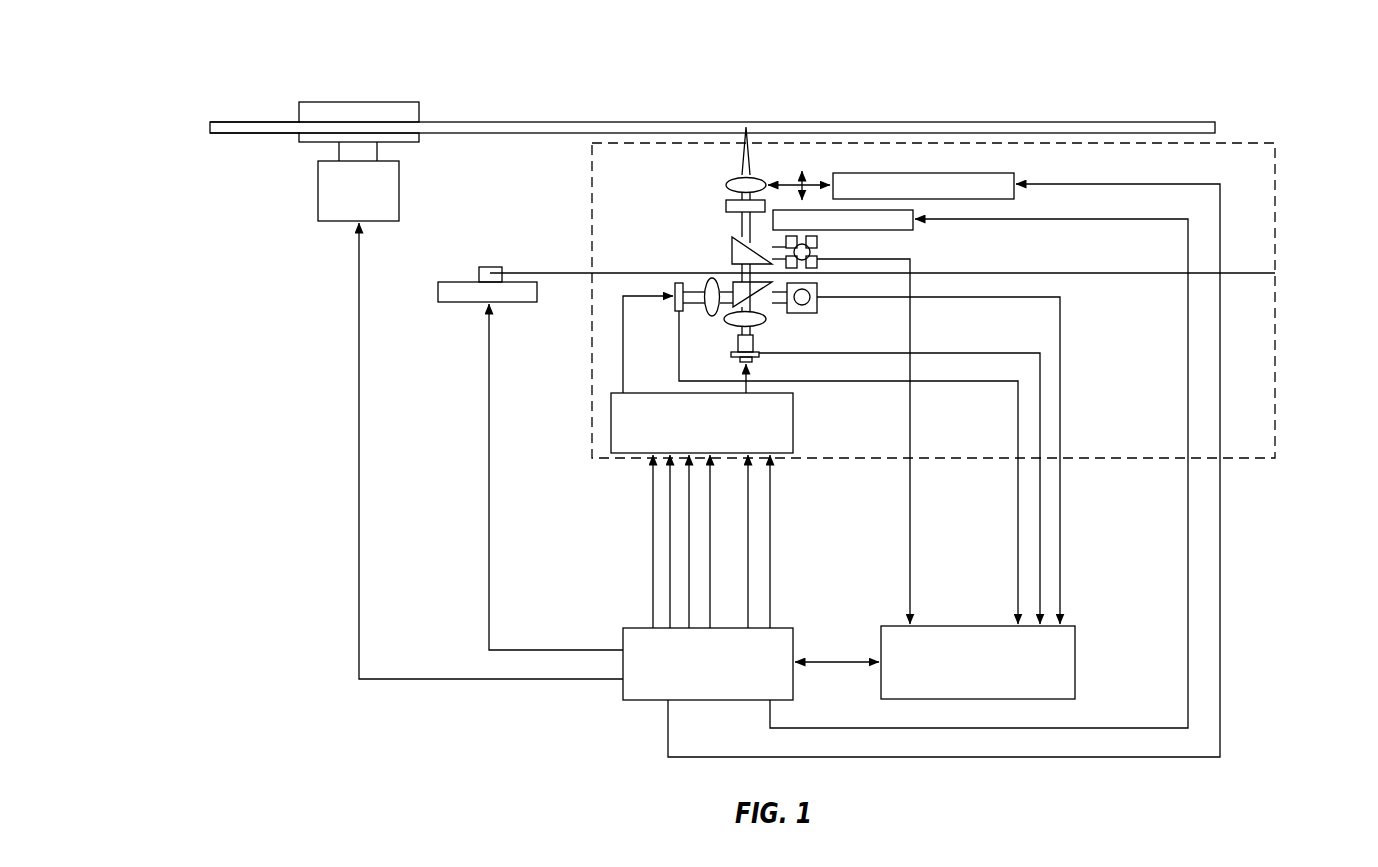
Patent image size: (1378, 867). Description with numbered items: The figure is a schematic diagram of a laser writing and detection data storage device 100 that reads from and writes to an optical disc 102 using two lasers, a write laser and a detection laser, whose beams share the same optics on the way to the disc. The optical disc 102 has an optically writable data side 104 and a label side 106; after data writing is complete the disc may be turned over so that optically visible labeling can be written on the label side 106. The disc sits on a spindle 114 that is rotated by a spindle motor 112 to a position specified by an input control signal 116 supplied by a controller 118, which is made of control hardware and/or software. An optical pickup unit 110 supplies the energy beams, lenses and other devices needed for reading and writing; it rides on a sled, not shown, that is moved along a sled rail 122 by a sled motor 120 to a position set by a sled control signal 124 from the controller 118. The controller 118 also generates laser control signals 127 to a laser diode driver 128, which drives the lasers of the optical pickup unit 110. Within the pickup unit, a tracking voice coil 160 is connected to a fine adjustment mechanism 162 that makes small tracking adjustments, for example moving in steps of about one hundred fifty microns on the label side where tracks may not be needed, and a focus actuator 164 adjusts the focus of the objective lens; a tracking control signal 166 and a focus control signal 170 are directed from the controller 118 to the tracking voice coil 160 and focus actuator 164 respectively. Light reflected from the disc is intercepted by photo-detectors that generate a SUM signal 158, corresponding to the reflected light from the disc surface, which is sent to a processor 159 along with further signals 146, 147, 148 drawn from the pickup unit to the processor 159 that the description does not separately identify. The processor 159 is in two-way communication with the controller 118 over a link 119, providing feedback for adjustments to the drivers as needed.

The data storage device 100 is at (571, 93).
The optical disc 102 is at (203, 124).
The optically writable data side 104 is at (248, 122).
The label side 106 is at (279, 134).
The optical pickup unit (OPU) 110 is at (1276, 180).
The spindle motor 112 is at (317, 203).
The spindle 114 is at (363, 102).
The input control signal 116 is at (359, 293).
The controller 118 is at (795, 635).
The link 119 is at (845, 665).
The sled motor 120 is at (455, 303).
The sled rail 122 is at (568, 278).
The sled control signal 124 is at (489, 412).
The laser control signals 127 is at (646, 556).
The laser diode driver 128 is at (795, 425).
The laser diode signal line 146 is at (1018, 500).
The detector signal line 147 is at (1040, 546).
The monitor detector signal line 148 is at (1060, 530).
The SUM signal 158 is at (910, 522).
The processor 159 is at (1077, 664).
The tracking voice coil 160 is at (905, 172).
The fine adjustment mechanism 162 is at (813, 173).
The focus actuator 164 is at (915, 229).
The tracking control signal 166 is at (1103, 184).
The focus control signal 170 is at (1073, 219).